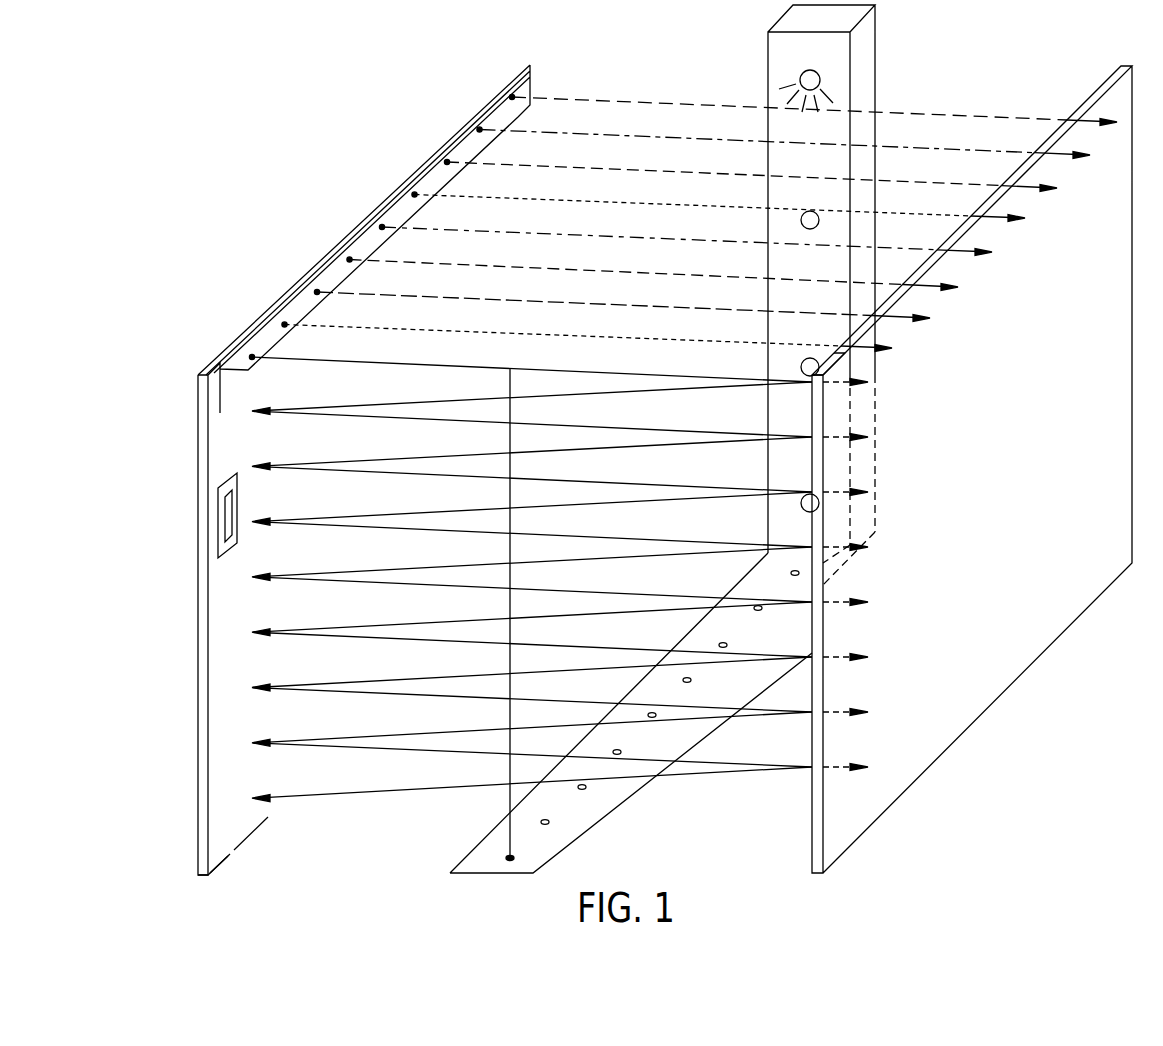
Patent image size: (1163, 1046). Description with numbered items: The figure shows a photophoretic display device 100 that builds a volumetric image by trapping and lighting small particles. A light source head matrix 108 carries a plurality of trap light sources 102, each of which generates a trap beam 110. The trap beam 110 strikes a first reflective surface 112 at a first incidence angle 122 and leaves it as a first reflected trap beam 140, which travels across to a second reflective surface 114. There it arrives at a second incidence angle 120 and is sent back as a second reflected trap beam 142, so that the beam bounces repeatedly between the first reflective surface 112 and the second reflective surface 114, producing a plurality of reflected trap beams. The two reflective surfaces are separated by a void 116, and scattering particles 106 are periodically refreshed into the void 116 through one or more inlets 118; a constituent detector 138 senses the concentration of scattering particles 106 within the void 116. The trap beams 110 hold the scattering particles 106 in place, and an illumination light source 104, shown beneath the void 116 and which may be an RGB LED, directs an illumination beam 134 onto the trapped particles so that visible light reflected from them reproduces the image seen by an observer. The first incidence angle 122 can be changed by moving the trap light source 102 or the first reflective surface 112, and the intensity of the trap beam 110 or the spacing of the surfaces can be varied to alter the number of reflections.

The photophoretic display device 100 is at (243, 130).
The trap light source 102 is at (251, 355).
The illumination light source 104 is at (510, 874).
The scattering particles 106 is at (590, 140).
The light source head matrix 108 is at (210, 396).
The trap beam 110 is at (318, 360).
The first reflective surface 112 is at (803, 858).
The second reflective surface 114 is at (219, 857).
The void 116 is at (670, 110).
The inlets 118 is at (800, 74).
The second incidence angle 120 is at (257, 410).
The first incidence angle 122 is at (838, 378).
The illumination beam 134 is at (509, 838).
The constituent detector 138 is at (220, 518).
The first reflected trap beam 140 is at (440, 400).
The second reflected trap beam 142 is at (430, 421).